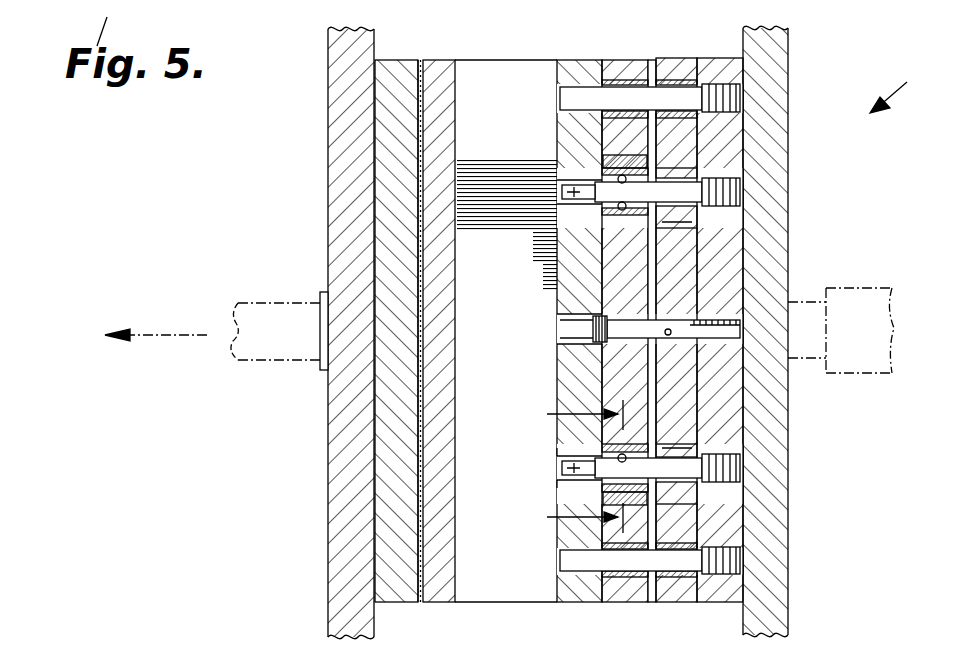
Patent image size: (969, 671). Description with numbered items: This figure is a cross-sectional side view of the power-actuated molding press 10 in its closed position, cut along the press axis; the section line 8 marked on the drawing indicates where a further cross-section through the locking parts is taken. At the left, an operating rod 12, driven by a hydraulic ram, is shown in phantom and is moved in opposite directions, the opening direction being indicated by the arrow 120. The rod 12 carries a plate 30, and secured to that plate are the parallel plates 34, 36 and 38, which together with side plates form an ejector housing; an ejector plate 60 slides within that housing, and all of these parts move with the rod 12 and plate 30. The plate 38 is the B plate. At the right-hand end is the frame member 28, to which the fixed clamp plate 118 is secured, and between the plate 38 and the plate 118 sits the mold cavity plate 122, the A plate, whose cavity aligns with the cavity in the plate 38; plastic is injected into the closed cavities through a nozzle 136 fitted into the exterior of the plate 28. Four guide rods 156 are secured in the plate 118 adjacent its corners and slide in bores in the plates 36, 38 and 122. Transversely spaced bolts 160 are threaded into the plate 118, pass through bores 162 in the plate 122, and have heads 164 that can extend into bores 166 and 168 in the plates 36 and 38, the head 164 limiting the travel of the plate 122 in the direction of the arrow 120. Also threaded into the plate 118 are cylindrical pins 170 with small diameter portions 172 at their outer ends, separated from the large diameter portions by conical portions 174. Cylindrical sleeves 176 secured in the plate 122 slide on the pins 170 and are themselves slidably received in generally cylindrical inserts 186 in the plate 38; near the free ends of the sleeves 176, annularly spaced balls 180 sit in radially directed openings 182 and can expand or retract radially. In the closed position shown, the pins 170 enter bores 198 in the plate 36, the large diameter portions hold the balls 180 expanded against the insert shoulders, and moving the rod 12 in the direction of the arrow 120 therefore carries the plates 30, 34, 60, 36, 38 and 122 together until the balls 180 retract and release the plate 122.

The section line 8- 8 is at (570, 466).
The power-actuated molding press 10 is at (898, 93).
The operating rod 12 is at (263, 303).
The frame member 28 is at (773, 50).
The plate 30 is at (347, 118).
The plate 34 is at (386, 479).
The plate 36 is at (579, 60).
The plate 38 is at (622, 62).
The ejector plate 60 is at (437, 72).
The fixed clamp plate 118 is at (712, 60).
The arrow 120 is at (158, 338).
The mold cavity plate 122 is at (668, 62).
The nozzle 136 is at (880, 288).
The guide rods 156 is at (720, 98).
The bolts 160 is at (690, 318).
The bores 162 is at (683, 335).
The heads 164 is at (595, 318).
The bore 166 is at (575, 330).
The bore 168 is at (600, 340).
The cylindrical pins 170 is at (678, 197).
The small diameter portions 172 is at (560, 224).
The conical portions 174 is at (590, 477).
The cylindrical sleeves 176 is at (648, 160).
The balls 180 is at (625, 168).
The radially directed openings 182 is at (651, 272).
The cylindrical inserts 186 is at (697, 248).
The bores 198 is at (561, 188).